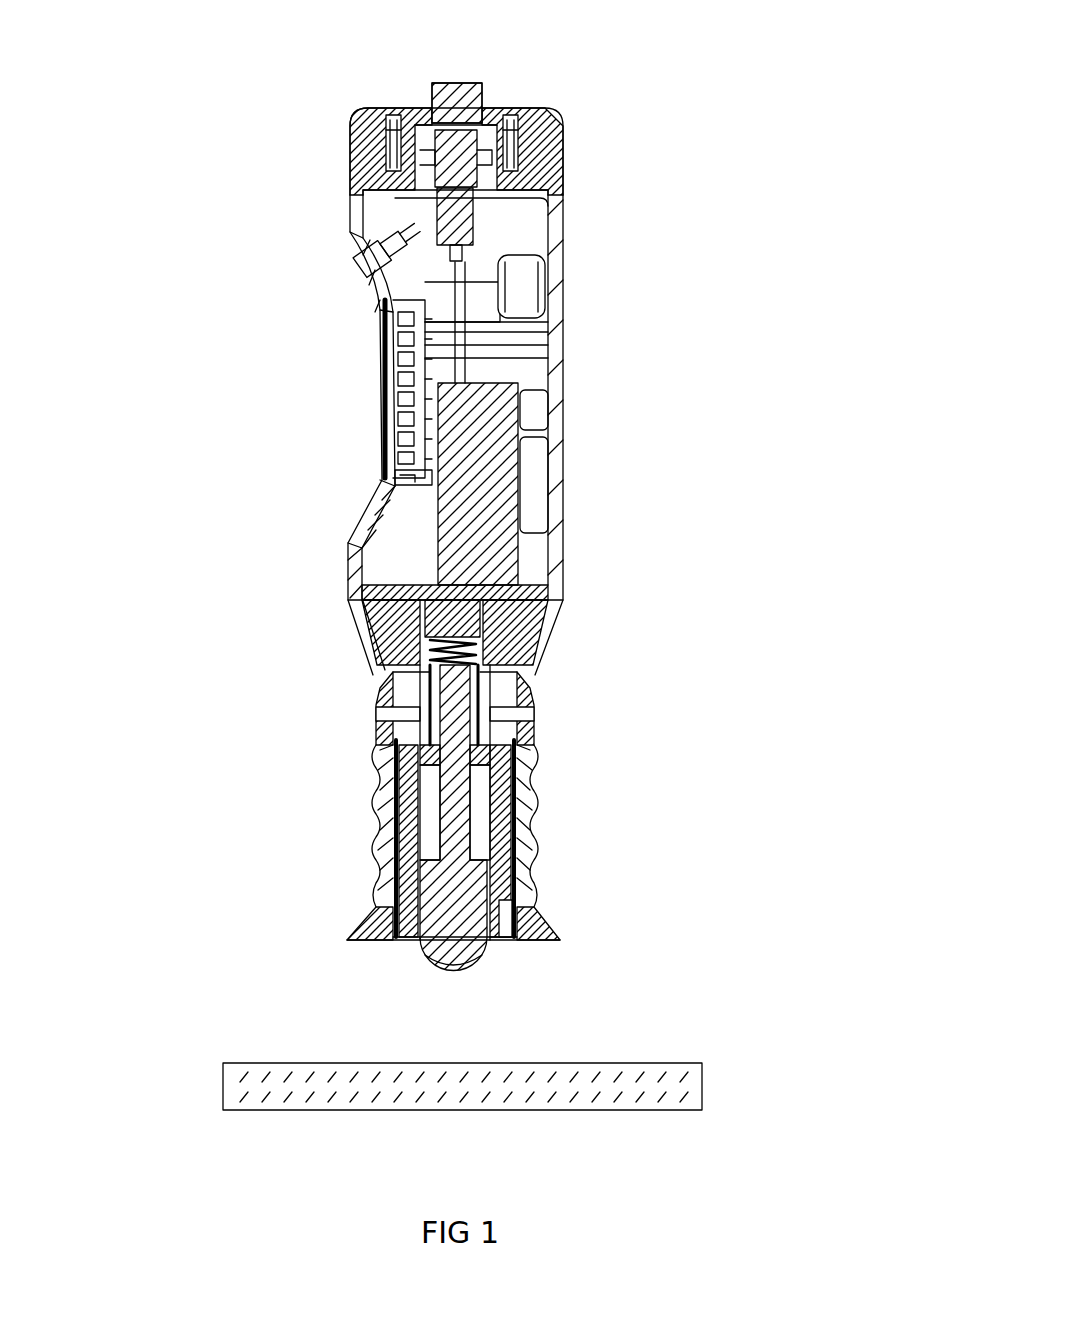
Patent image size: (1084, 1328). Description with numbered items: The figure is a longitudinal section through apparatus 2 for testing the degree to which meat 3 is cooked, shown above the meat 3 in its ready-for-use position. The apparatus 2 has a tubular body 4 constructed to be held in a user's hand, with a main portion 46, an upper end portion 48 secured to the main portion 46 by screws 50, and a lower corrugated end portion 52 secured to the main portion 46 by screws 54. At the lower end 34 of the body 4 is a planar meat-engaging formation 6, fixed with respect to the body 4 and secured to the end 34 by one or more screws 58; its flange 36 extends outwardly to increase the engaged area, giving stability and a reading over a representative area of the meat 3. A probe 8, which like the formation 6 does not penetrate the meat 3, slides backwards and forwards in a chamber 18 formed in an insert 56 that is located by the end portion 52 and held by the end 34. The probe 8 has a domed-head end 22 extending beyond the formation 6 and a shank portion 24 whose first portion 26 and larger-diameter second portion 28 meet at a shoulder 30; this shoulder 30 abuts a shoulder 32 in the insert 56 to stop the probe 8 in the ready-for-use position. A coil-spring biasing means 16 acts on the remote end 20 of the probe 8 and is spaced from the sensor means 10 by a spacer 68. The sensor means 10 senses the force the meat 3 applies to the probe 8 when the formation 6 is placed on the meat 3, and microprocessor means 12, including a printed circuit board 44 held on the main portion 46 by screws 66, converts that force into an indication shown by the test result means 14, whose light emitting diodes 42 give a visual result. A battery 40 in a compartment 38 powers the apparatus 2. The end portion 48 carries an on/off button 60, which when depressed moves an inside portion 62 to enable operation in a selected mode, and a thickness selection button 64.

The apparatus 2 is at (648, 76).
The meat 3 is at (712, 1050).
The body 4 is at (566, 455).
The meat-engaging formation 6 is at (553, 946).
The probe 8 is at (424, 962).
The sensor means 10 is at (490, 596).
The microprocessor means 12 is at (475, 357).
The test result means 14 is at (376, 422).
The biasing means 16 is at (427, 643).
The chamber 18 is at (477, 808).
The end of the probe 20 is at (393, 672).
The end of the probe 22 is at (470, 963).
The shank portion 24 is at (436, 798).
The first portion 26 is at (430, 840).
The second portion 28 is at (432, 737).
The shoulder 30 is at (423, 743).
The shoulder 32 is at (530, 748).
The end of the body 34 is at (522, 905).
The flange 36 is at (550, 930).
The compartment 38 is at (522, 470).
The battery 40 is at (495, 547).
The light emitting diodes 42 is at (387, 400).
The printed circuit board 44 is at (540, 317).
The main portion 46 is at (563, 225).
The end portion 48 is at (563, 148).
The screws 50 is at (396, 113).
The end portion 52 is at (522, 826).
The screws 54 is at (372, 713).
The insert 56 is at (500, 852).
The screws 58 is at (505, 945).
The on/off button 60 is at (460, 85).
The inside portion 62 is at (456, 173).
The thickness selection button 64 is at (352, 268).
The screws 66 is at (392, 478).
The spacer 68 is at (437, 586).